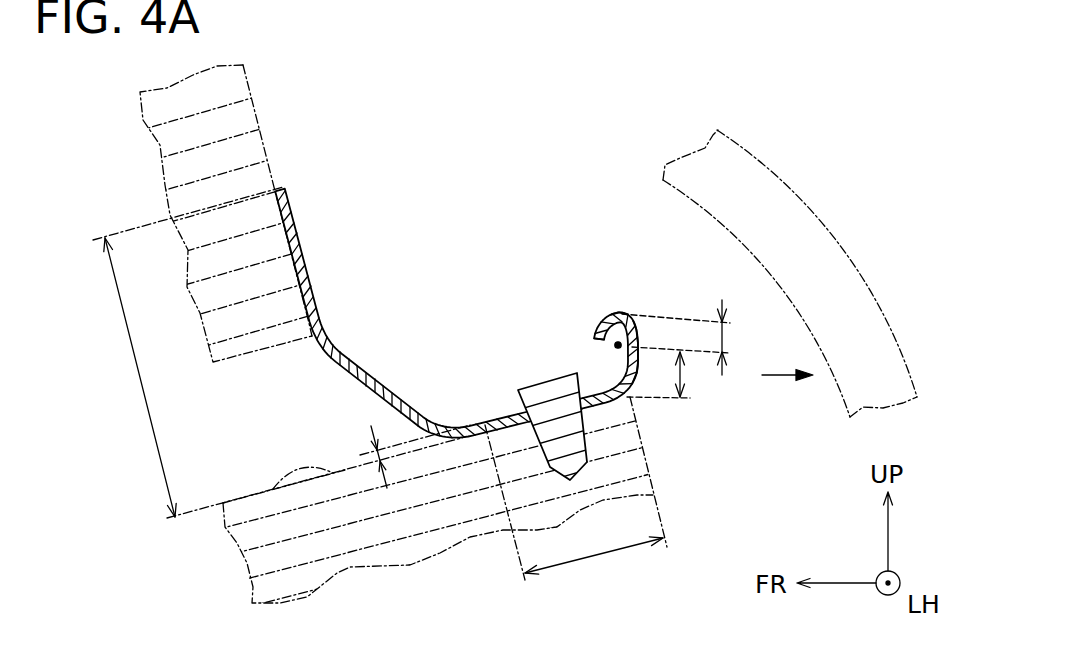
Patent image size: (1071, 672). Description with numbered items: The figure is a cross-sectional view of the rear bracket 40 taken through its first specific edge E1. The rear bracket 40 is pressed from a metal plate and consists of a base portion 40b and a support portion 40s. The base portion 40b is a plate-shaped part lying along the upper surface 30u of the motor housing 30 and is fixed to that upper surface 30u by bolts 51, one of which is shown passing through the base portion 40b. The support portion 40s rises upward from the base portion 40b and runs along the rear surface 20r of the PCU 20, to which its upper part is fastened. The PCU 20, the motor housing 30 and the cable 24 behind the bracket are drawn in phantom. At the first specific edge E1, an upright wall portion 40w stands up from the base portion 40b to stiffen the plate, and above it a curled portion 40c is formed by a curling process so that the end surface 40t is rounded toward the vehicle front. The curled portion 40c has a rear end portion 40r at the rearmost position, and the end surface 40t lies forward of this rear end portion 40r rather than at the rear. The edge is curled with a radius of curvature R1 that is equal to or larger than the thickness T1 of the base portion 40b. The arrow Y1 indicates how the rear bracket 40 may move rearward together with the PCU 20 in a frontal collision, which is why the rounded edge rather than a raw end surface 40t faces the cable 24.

The PCU 20 is at (208, 123).
The rear surface 20r is at (264, 149).
The cable 24 is at (783, 180).
The motor housing 30 is at (277, 556).
The upper surface 30u is at (343, 472).
The rear bracket 40 is at (407, 343).
The support portion 40s is at (140, 380).
The base portion 40b is at (598, 556).
The rear end portion 40r is at (642, 324).
The end surface 40t is at (596, 341).
The curled portion 40c is at (724, 341).
The upright wall portion 40w is at (684, 374).
The bolt 51 is at (535, 392).
The first specific edge E1 is at (622, 309).
The radius of curvature R1 is at (616, 342).
The thickness T1 is at (366, 452).
The arrow Y1 is at (780, 378).